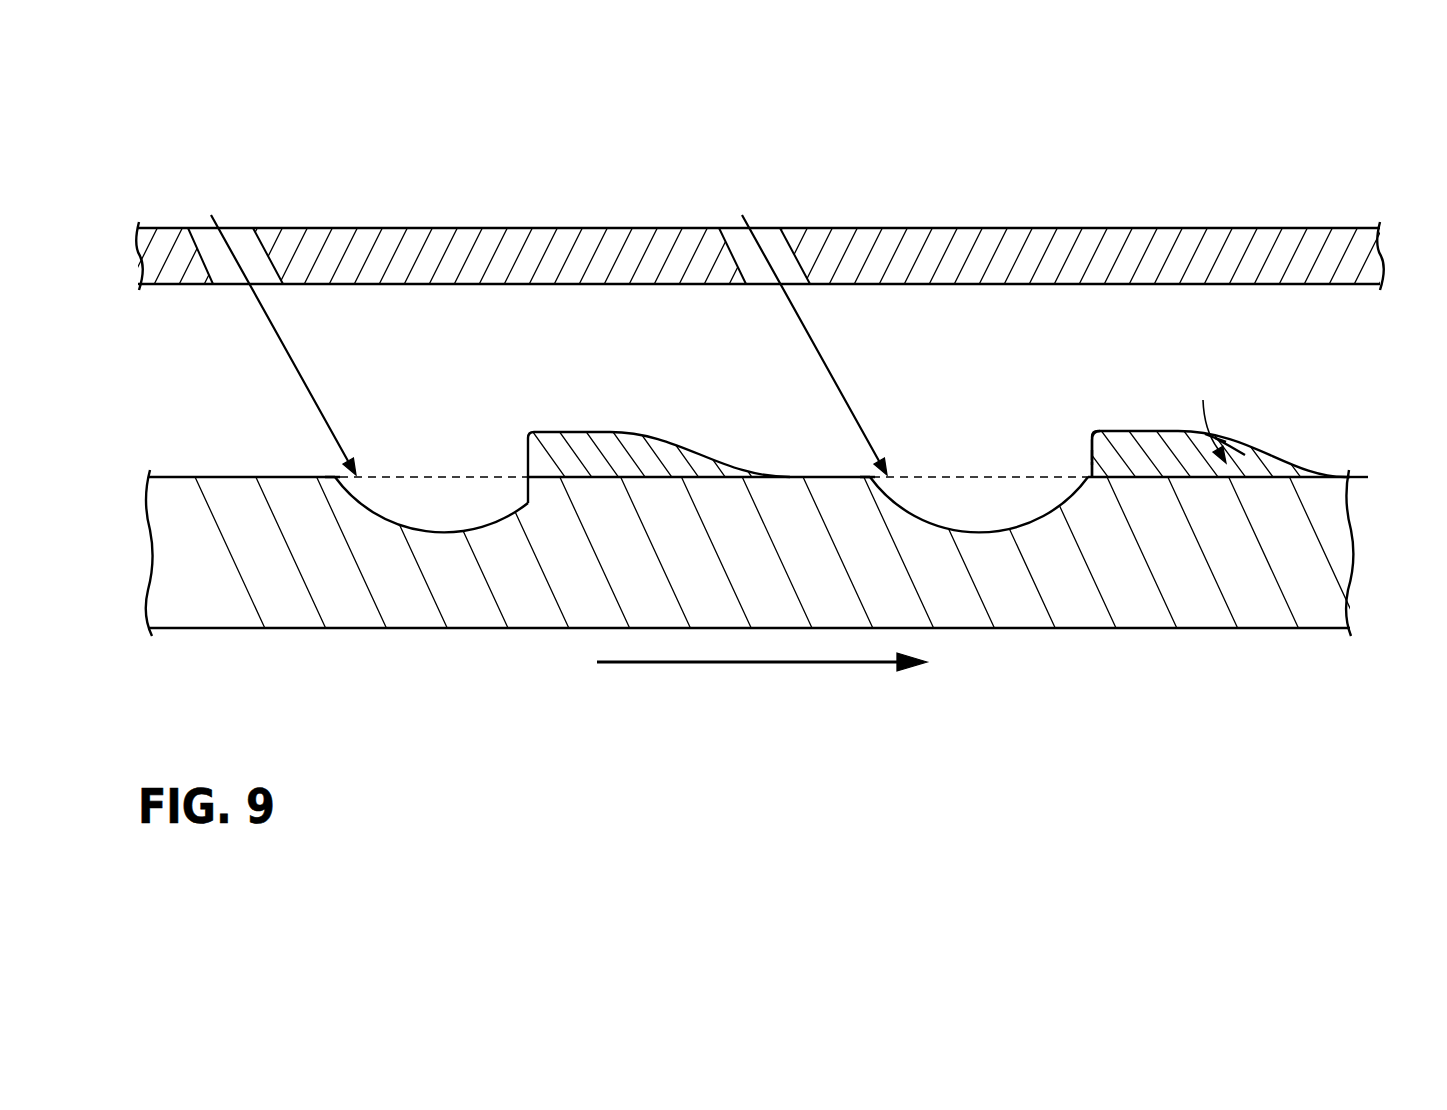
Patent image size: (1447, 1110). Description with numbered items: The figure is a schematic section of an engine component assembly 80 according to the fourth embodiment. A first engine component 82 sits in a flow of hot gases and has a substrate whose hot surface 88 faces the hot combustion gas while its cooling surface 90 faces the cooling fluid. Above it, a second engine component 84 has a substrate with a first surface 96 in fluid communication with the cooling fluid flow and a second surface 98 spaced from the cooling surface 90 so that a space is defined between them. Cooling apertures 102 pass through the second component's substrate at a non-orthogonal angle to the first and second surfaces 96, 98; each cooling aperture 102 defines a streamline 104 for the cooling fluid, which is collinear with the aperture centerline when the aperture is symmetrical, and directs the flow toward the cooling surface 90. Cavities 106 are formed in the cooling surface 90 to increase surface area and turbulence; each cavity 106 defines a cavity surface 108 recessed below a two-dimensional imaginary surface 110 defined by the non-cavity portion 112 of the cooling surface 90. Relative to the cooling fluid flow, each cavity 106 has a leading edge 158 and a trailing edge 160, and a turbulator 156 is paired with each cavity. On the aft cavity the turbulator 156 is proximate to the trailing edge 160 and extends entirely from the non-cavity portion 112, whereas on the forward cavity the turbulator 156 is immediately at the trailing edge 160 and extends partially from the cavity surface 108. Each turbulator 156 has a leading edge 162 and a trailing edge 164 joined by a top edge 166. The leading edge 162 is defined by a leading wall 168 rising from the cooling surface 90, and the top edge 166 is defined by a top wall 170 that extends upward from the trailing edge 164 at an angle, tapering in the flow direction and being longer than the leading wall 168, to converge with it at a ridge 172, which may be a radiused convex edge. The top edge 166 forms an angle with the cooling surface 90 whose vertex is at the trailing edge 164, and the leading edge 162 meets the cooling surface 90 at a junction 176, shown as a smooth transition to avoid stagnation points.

The engine component assembly 80 is at (195, 124).
The first engine component 82 is at (758, 501).
The second engine component 84 is at (766, 245).
The hot surface 88 is at (188, 633).
The cooling surface 90 is at (187, 477).
The first surface 96 is at (153, 227).
The second surface 98 is at (170, 286).
The cooling aperture 102 is at (266, 239).
The streamline 104 is at (270, 320).
The cavity 106 is at (711, 535).
The cavity surface 108 is at (412, 532).
The imaginary surface 110 is at (1372, 476).
The non-cavity portion 112 is at (706, 468).
The turbulator 156 is at (907, 497).
The leading edge 158 is at (347, 475).
The trailing edge 160 is at (527, 478).
The leading edge 162 is at (1087, 436).
The trailing edge 164 is at (1207, 481).
The top edge 166 is at (1230, 444).
The leading wall 168 is at (1090, 458).
The top wall 170 is at (1226, 443).
The ridge 172 is at (1092, 450).
The junction 176 is at (1090, 468).